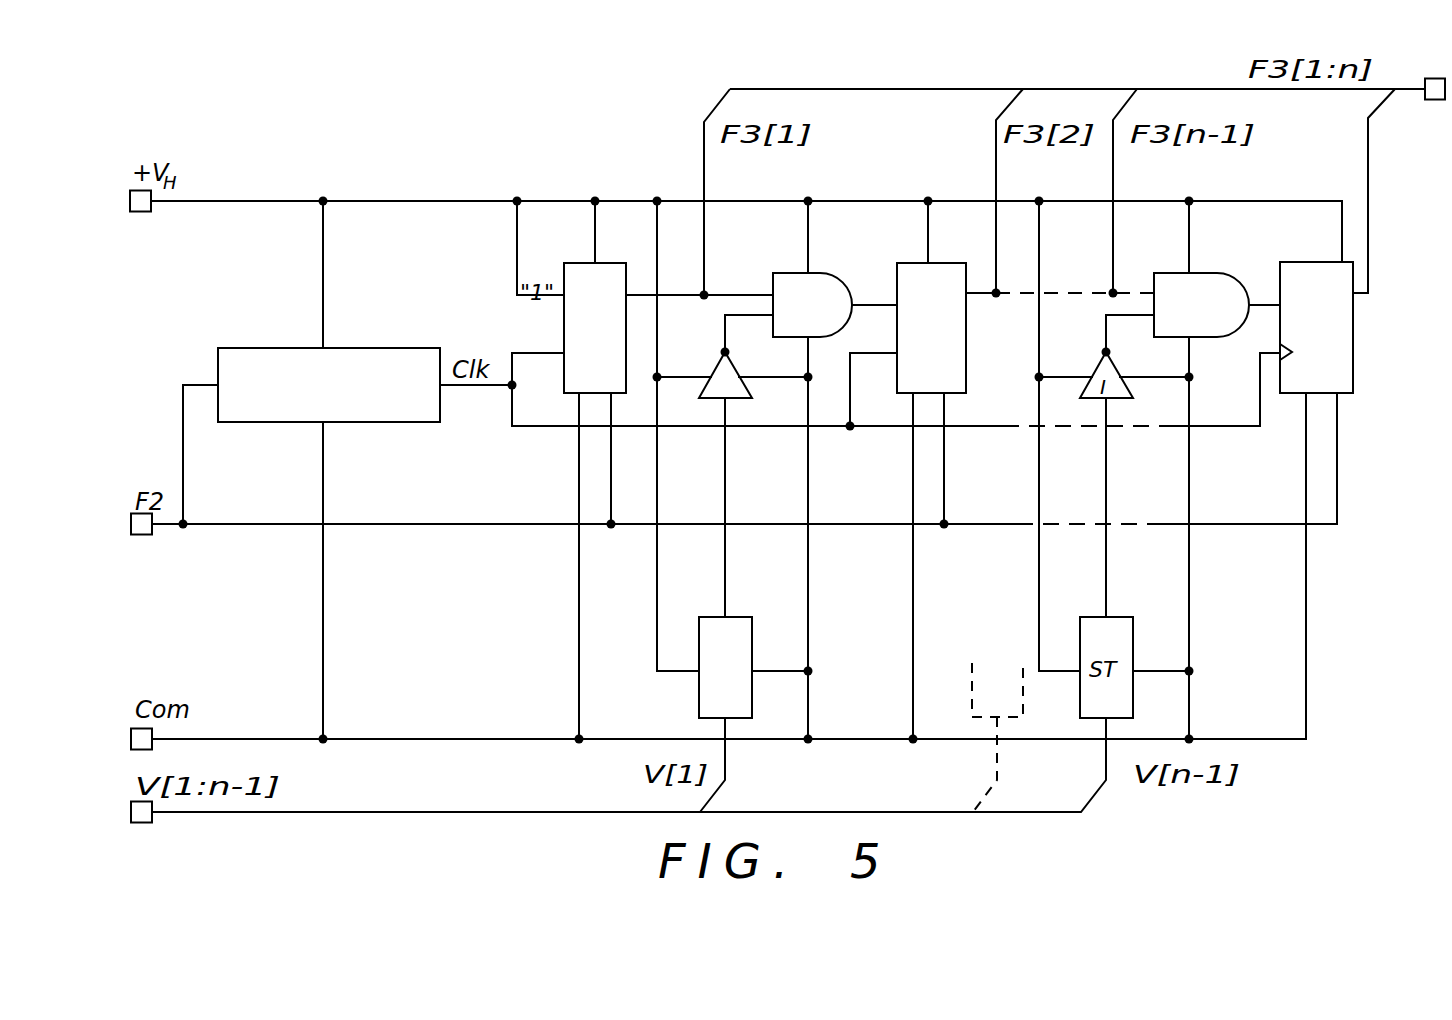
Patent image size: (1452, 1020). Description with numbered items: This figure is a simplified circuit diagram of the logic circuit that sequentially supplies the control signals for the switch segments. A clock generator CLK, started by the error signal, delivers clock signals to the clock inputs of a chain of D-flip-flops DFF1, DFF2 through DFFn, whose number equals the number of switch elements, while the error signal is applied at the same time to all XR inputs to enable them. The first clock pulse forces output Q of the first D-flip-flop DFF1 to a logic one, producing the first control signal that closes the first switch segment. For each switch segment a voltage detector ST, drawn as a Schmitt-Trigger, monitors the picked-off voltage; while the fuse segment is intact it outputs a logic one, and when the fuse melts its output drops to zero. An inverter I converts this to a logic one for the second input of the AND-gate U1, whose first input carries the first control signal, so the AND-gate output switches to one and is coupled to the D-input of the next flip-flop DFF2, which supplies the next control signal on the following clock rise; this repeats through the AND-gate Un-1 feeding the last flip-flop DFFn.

The clock generator CLK is at (329, 385).
The first D-flip-flop DFF1 is at (595, 329).
The second D-flip-flop DFF2 is at (931, 329).
The n-th D-flip-flop DFFn is at (1316, 328).
The AND-gate U1 is at (812, 305).
The AND-gate Un-1 is at (1201, 305).
The inverter I is at (725, 375).
The voltage detector ST is at (725, 667).